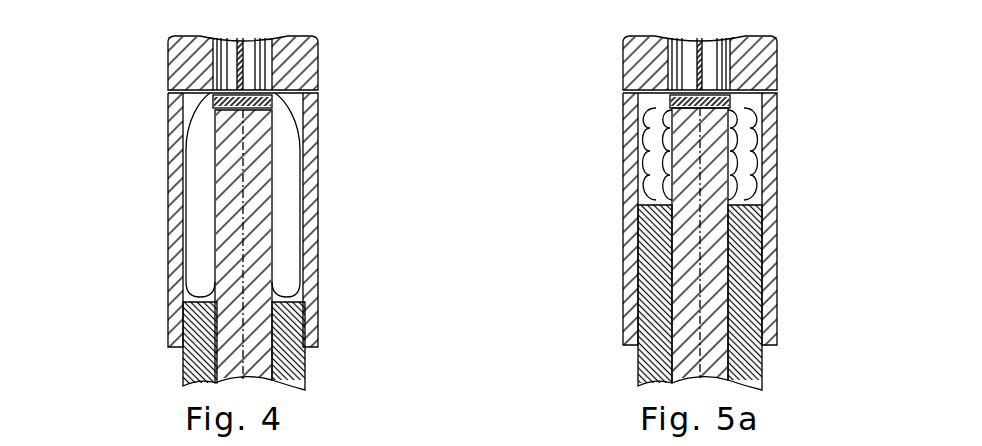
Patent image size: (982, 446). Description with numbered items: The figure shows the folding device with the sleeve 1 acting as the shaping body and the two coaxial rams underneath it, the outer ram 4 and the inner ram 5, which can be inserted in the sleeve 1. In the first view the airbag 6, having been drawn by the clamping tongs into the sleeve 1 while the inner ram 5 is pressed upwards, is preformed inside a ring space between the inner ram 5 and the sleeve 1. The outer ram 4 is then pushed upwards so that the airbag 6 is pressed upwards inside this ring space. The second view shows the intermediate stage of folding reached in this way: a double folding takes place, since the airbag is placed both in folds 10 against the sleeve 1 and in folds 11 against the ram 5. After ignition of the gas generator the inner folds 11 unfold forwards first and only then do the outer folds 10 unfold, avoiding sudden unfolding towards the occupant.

In FIG. 4, the sleeve 1 is at (313, 117).
In FIG. 5A, the sleeve 1 is at (765, 116).
In FIG. 4, the outer ram 4 is at (297, 372).
In FIG. 5A, the outer ram 4 is at (700, 297).
In FIG. 4, the inner ram 5 is at (258, 218).
In FIG. 5A, the inner ram 5 is at (690, 262).
In FIG. 4, the airbag 6 is at (300, 160).
In FIG. 5A, the folds 10 is at (760, 165).
In FIG. 5A, the folds 11 is at (632, 172).